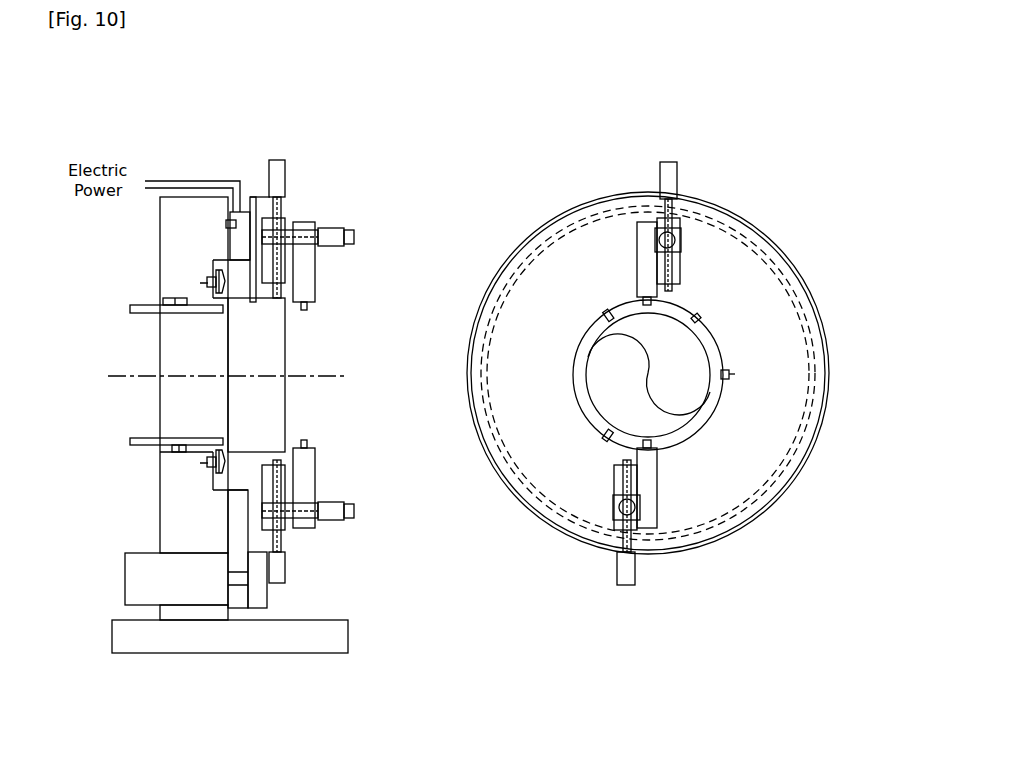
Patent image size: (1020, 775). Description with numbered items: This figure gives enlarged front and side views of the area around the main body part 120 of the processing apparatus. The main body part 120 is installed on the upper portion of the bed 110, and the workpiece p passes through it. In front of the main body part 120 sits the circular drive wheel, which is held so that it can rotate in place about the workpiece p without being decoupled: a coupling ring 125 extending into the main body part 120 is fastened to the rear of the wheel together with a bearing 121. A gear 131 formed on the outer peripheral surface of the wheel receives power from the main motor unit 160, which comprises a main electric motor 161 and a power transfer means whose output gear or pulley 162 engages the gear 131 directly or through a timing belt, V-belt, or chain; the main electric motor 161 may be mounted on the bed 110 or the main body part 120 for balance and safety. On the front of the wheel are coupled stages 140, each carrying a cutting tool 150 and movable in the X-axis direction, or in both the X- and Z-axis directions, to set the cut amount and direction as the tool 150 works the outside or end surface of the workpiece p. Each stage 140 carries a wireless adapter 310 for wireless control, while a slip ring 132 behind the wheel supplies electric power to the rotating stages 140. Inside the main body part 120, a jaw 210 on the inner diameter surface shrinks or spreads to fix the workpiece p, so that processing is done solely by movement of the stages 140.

The bed 110 is at (258, 655).
The main body part 120 is at (165, 238).
The bearing 121 is at (205, 283).
The coupling ring 125 is at (207, 268).
The gear 131 is at (250, 195).
The slip ring 132 is at (232, 224).
The stage 140 is at (335, 210).
The cutting tool 150 is at (308, 310).
The main motor unit 160 is at (146, 551).
The main electric motor 161 is at (130, 578).
The output gear or pulley 162 is at (268, 598).
The jaw 210 is at (130, 436).
The wireless adapter 310 is at (307, 148).
The workpiece p is at (700, 325).